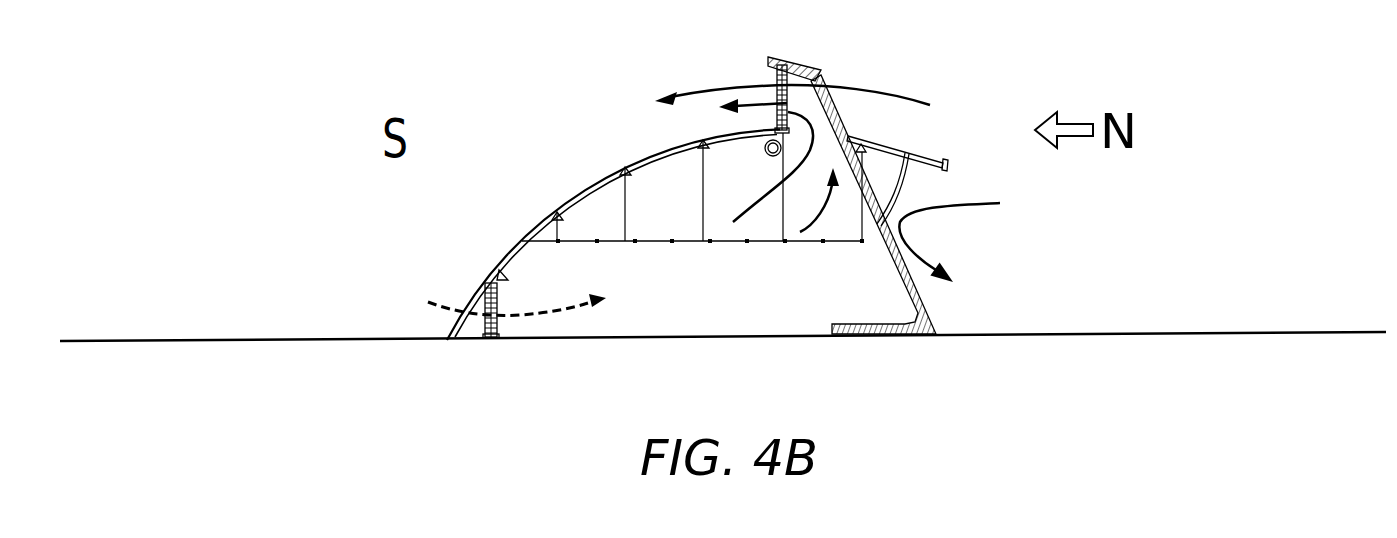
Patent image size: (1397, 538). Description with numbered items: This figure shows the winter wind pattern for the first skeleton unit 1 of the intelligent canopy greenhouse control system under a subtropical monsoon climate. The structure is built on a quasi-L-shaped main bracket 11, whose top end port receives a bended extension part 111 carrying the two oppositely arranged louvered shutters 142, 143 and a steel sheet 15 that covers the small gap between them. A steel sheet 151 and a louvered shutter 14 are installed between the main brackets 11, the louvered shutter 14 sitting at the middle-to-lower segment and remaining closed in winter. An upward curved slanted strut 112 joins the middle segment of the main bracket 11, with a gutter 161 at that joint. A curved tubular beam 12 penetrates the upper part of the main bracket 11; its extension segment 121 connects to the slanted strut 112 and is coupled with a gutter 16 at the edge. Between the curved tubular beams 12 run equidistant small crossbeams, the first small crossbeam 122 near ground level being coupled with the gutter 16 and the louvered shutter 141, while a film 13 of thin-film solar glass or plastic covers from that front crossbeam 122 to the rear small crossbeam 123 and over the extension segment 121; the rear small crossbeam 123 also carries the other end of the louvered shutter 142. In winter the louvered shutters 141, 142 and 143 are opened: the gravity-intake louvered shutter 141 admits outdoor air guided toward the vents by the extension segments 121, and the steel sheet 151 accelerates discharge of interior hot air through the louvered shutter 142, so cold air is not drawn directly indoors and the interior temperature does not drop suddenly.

The first skeleton unit 1 is at (543, 124).
The main bracket 11 is at (920, 293).
The curved tubular beam 12 is at (521, 247).
The film 13 is at (565, 197).
The louvered shutter 14 is at (902, 278).
The steel sheet 15 is at (777, 58).
The gutter 16 is at (484, 284).
The bended extension part 111 is at (818, 73).
The upward curved slanted strut 112 is at (898, 188).
The extension segment 121 is at (925, 156).
The first small crossbeam 122 is at (503, 270).
The rear small crossbeam 123 is at (765, 142).
The louvered shutter 141 is at (482, 338).
The louvered shutter 142 is at (777, 120).
The louvered shutter 143 is at (840, 111).
The steel sheet 151 is at (860, 176).
The gutter 161 is at (945, 162).